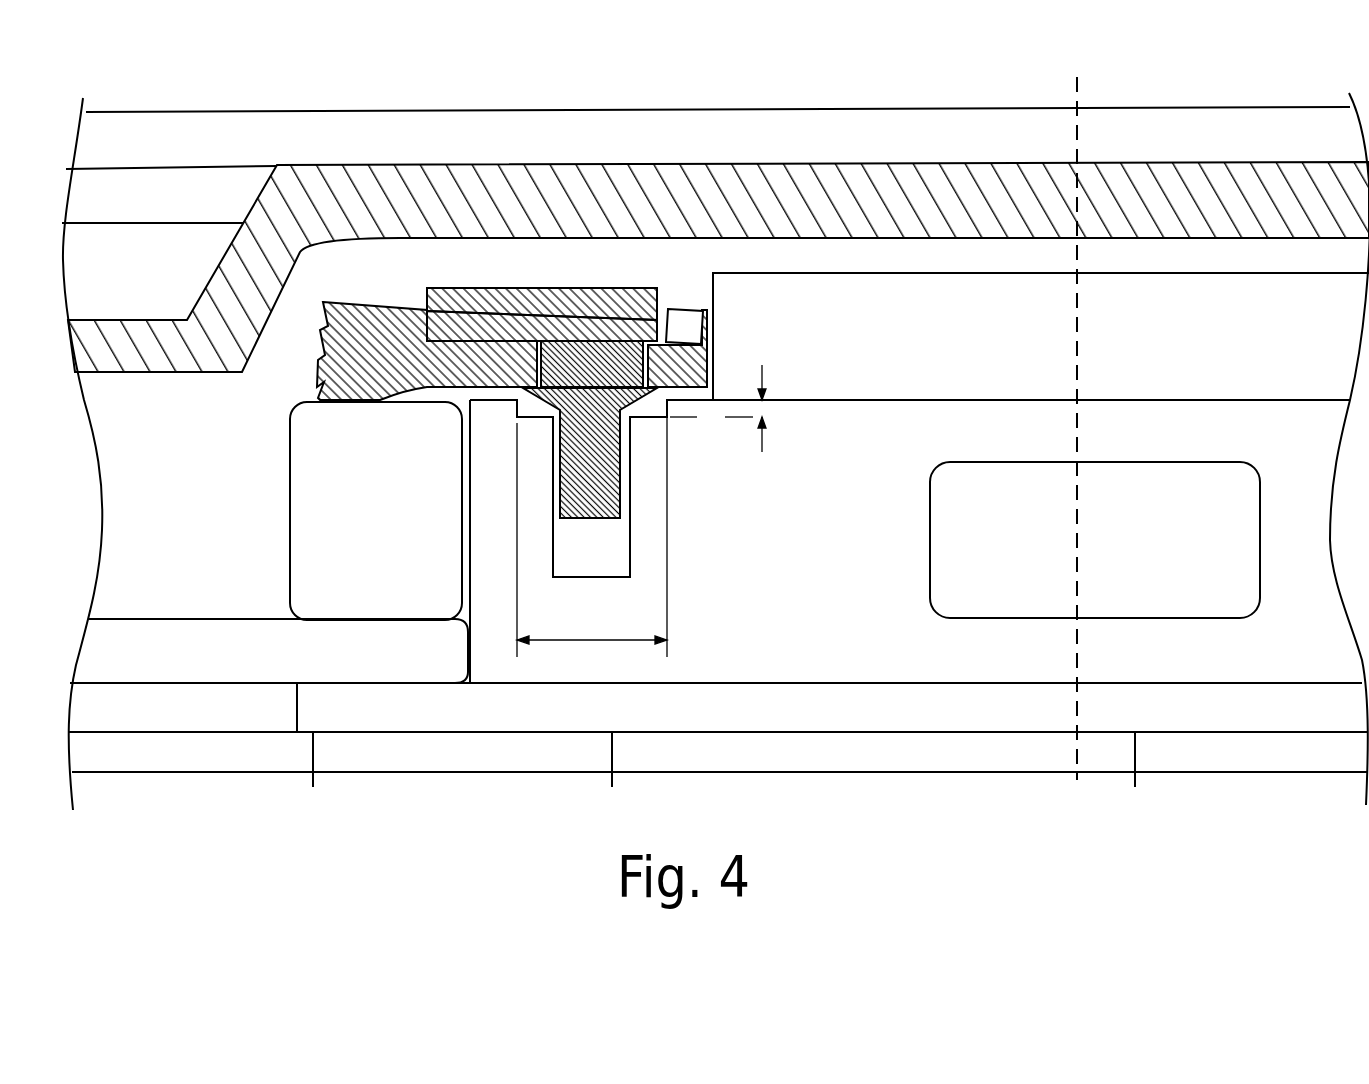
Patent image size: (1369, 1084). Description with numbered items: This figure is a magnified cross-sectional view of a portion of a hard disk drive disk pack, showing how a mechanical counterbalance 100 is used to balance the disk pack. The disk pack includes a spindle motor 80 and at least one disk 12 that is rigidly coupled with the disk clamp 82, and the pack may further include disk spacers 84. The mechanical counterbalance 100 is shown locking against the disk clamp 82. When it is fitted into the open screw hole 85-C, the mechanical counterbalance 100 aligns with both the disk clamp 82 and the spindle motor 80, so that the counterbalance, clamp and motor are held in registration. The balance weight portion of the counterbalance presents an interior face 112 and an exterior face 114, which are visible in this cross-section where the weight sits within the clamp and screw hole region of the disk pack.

The disk 12 is at (208, 618).
The spindle motor 80 is at (826, 568).
The disk clamp 82 is at (332, 302).
The disk spacer 84 is at (396, 511).
The open screw hole 85-C is at (687, 387).
The mechanical counterbalance 100 is at (525, 288).
The interior face 112 is at (657, 304).
The exterior face 114 is at (422, 300).